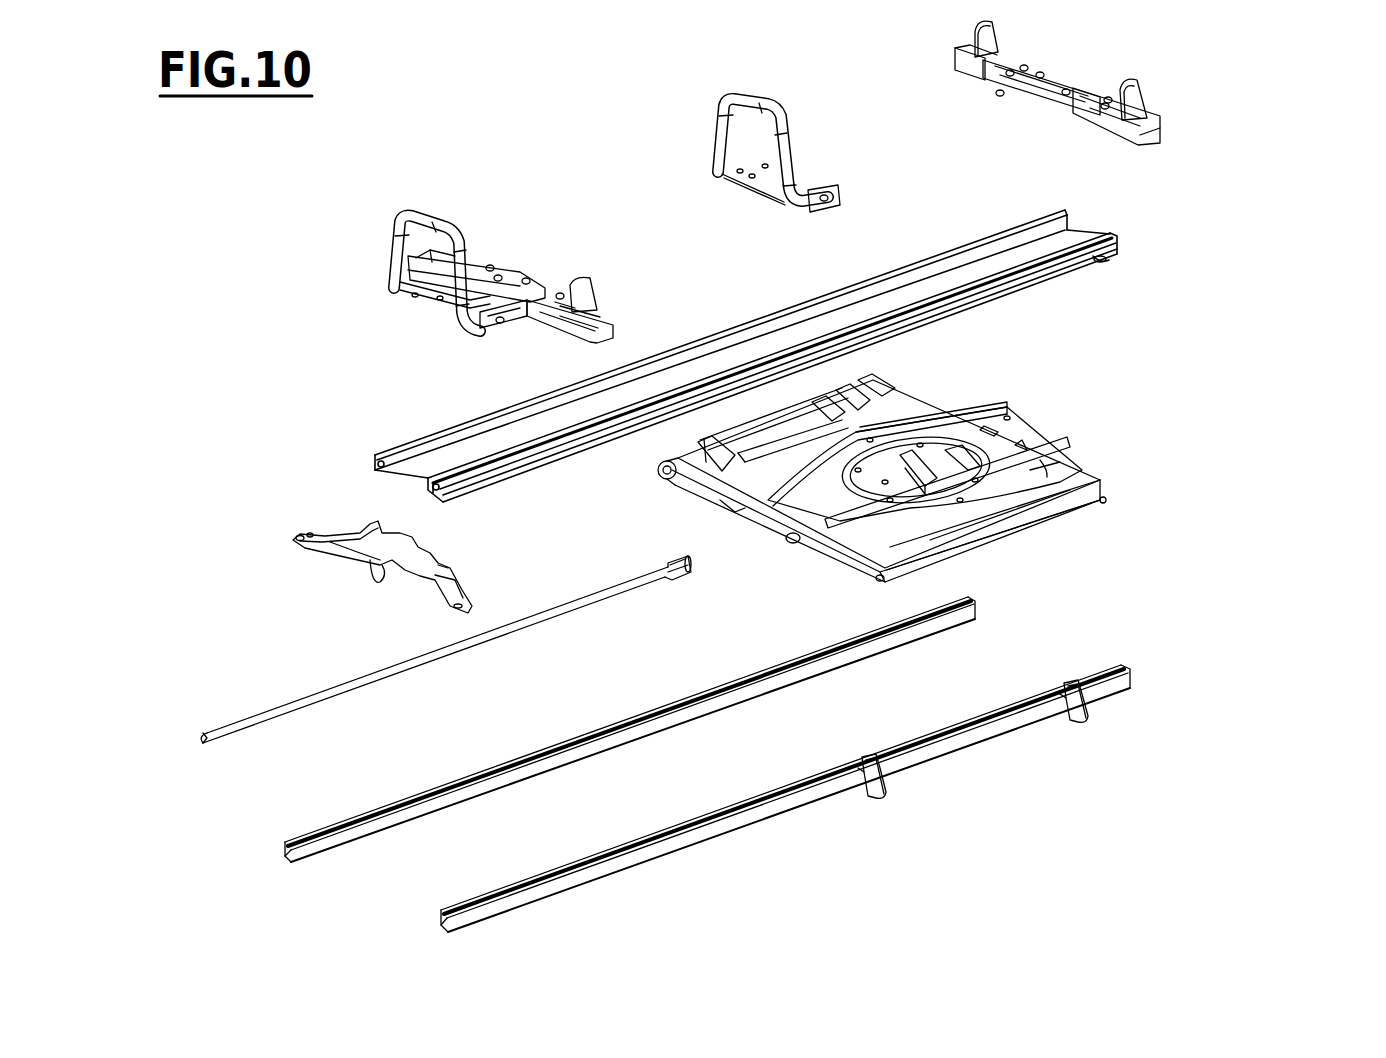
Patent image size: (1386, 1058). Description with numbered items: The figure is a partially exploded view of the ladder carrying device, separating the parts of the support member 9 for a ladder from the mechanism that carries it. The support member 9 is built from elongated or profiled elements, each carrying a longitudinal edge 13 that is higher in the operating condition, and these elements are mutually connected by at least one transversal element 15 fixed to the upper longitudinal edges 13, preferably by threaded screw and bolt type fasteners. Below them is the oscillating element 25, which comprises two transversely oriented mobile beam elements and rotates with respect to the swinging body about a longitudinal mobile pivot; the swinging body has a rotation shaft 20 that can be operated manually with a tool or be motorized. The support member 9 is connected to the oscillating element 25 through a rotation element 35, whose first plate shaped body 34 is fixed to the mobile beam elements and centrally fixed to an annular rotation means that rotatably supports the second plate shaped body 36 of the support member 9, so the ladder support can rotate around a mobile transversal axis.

The support member 9 is at (1214, 110).
The longitudinal edge 13 is at (503, 752).
The transversal element 15 is at (320, 548).
The rotation shaft 20 is at (340, 688).
The oscillating element 25 is at (930, 449).
The first plate shaped body 34 is at (1047, 475).
The rotation element 35 is at (988, 508).
The second plate shaped body 36 is at (1013, 437).